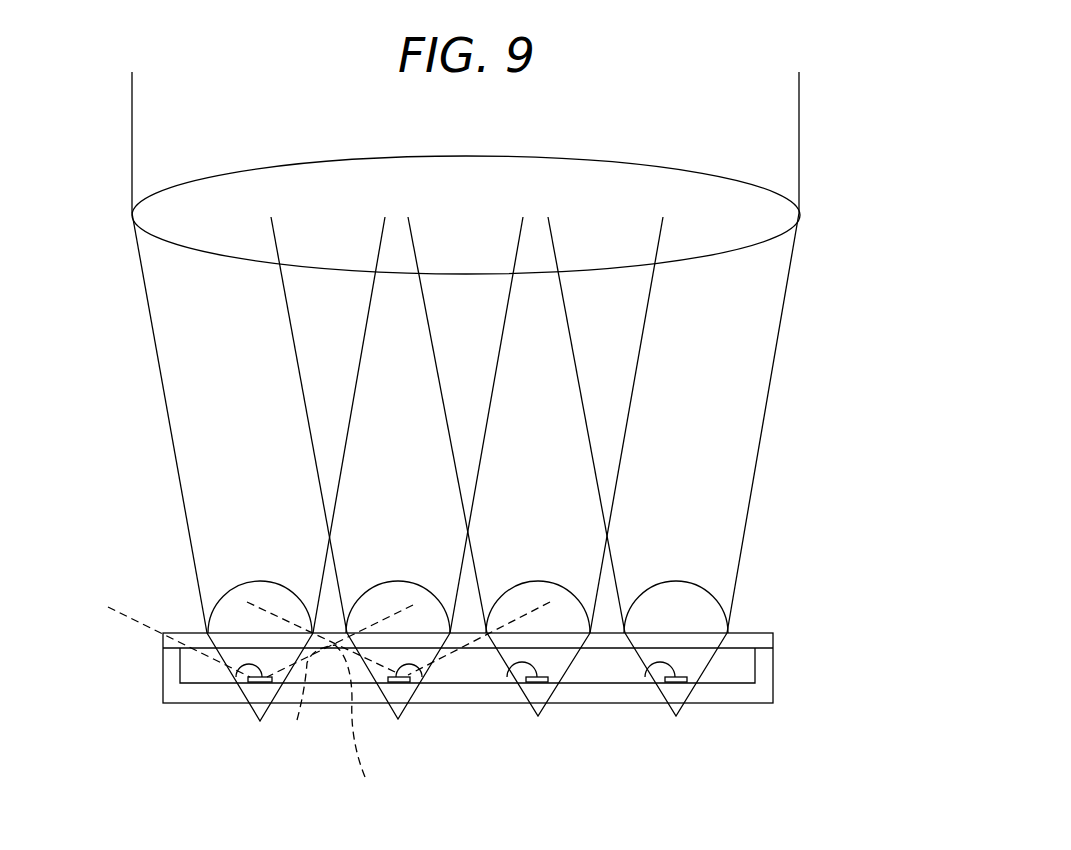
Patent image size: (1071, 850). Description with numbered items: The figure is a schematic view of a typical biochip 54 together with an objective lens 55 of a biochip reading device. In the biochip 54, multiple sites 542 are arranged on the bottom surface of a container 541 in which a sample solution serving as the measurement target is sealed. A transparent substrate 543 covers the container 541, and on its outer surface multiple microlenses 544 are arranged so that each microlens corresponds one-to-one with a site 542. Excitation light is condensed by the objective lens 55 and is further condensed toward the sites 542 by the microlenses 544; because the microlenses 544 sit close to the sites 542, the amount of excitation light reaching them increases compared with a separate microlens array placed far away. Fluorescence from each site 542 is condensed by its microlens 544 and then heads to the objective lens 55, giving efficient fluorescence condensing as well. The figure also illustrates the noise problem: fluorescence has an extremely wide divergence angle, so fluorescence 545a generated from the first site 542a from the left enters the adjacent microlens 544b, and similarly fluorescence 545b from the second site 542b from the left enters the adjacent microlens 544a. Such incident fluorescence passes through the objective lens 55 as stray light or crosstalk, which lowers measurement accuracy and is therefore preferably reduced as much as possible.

The objective lens 55 is at (730, 178).
The biochip 54 is at (785, 650).
The container 541 is at (758, 703).
The transparent substrate 543 is at (758, 633).
The microlens 544a is at (265, 581).
The microlens 544b is at (405, 581).
The microlens 544 is at (543, 581).
The first site 542a is at (236, 677).
The second site 542b is at (420, 677).
The site 542 is at (510, 667).
The fluorescence 545a is at (302, 701).
The fluorescence 545b is at (363, 729).